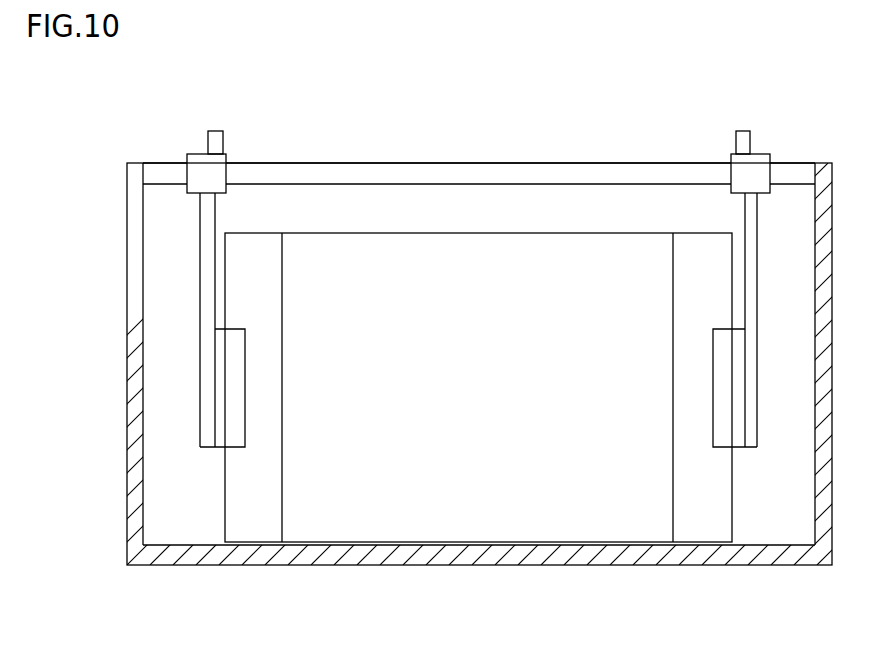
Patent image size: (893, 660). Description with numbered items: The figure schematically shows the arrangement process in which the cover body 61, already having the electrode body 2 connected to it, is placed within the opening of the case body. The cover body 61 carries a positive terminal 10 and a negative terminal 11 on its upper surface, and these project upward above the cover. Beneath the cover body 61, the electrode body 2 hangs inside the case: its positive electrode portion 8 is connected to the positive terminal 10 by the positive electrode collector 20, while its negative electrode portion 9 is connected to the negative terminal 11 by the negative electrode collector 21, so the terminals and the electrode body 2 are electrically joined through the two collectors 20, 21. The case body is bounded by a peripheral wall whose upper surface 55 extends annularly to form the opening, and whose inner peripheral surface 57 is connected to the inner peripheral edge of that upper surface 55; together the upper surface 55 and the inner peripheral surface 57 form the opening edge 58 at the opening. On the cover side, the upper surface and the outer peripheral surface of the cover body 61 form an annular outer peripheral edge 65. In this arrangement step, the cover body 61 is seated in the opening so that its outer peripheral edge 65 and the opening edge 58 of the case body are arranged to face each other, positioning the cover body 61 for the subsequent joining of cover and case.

The electrode body 2 is at (498, 520).
The positive electrode portion 8 is at (240, 283).
The negative electrode portion 9 is at (717, 292).
The positive terminal 10 is at (218, 140).
The negative terminal 11 is at (745, 140).
The positive electrode collector 20 is at (233, 402).
The negative electrode collector 21 is at (730, 410).
The upper surface 55 is at (135, 163).
The inner peripheral surface 57 is at (160, 246).
The opening edge 58 is at (143, 163).
The cover body 61 is at (480, 170).
The outer peripheral edge 65 is at (815, 163).